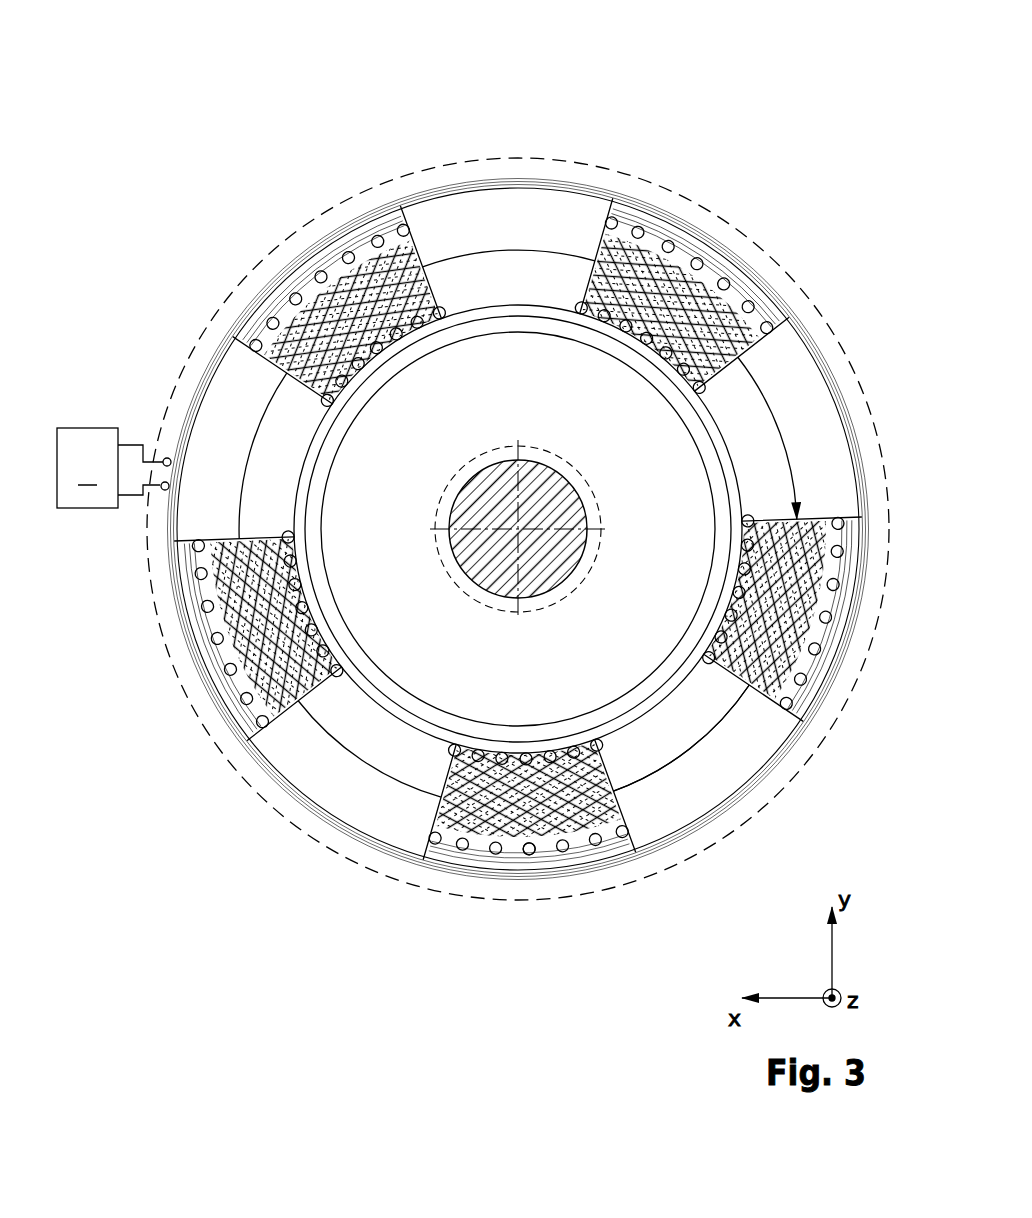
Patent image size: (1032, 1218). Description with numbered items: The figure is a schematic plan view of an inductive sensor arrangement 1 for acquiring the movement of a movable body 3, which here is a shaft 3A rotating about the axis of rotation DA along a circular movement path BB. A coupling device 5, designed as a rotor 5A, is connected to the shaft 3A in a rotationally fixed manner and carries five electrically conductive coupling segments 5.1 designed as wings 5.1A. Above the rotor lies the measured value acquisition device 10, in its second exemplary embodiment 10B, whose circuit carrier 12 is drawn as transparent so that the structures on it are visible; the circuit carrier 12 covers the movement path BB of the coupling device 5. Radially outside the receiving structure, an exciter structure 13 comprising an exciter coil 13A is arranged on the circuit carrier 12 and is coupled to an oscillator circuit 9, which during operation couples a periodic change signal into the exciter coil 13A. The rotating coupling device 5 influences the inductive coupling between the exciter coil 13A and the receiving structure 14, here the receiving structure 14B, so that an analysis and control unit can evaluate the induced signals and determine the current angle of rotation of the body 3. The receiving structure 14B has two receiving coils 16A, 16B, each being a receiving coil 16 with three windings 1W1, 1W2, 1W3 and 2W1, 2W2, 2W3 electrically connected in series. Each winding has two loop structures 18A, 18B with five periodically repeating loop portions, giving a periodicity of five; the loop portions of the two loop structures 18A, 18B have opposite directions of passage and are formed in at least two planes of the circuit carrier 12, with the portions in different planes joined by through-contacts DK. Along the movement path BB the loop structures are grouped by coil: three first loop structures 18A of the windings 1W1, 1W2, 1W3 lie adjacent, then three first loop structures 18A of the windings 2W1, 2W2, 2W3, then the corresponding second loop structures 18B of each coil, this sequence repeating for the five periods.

The inductive sensor arrangement 1 is at (138, 160).
The movable body 3 is at (531, 549).
The shaft 3A is at (557, 570).
The coupling device 5 is at (518, 624).
The rotor 5A is at (425, 670).
The coupling segment 5.1 is at (529, 528).
The wing 5.1A is at (803, 355).
The oscillator circuit 9 is at (114, 468).
The measured value acquisition device 10 is at (147, 50).
The measured value acquisition device 10B is at (190, 92).
The circuit carrier 12 is at (714, 845).
The exciter structure 13 is at (485, 529).
The exciter coil 13A is at (243, 763).
The receiving structure 14 is at (472, 529).
The receiving structure 14B is at (230, 305).
The receiving coil 16 is at (182, 79).
The first receiving coil 16A is at (293, 93).
The second receiving coil 16B is at (182, 79).
The first loop structure 18A is at (502, 483).
The second loop structure 18B is at (502, 483).
The first winding 1W1 is at (354, 294).
The second winding 1W2 is at (354, 294).
The third winding 1W3 is at (375, 250).
The first winding 2W1 is at (696, 261).
The second winding 2W2 is at (696, 261).
The third winding 2W3 is at (802, 230).
The axis of rotation DA is at (521, 532).
The through-contact DK is at (518, 853).
The movement path BB is at (727, 722).